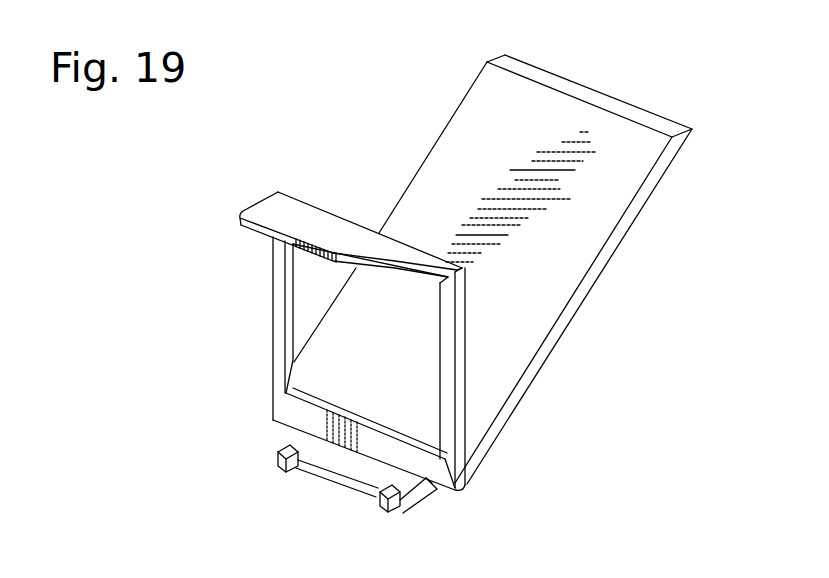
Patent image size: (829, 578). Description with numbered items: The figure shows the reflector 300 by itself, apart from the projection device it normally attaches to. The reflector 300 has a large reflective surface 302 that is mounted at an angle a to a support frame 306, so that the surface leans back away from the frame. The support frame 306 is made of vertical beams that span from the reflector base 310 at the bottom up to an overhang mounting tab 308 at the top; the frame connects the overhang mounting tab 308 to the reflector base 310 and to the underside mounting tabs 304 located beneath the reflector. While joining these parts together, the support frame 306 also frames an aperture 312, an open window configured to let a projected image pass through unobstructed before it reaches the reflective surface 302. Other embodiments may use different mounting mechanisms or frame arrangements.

The reflector 300 is at (568, 341).
The reflective surface 302 is at (476, 158).
The underside mounting tabs 304 is at (275, 452).
The support frame 306 is at (270, 330).
The overhang mounting tab 308 is at (285, 213).
The reflector base 310 is at (425, 502).
The aperture 312 is at (312, 313).